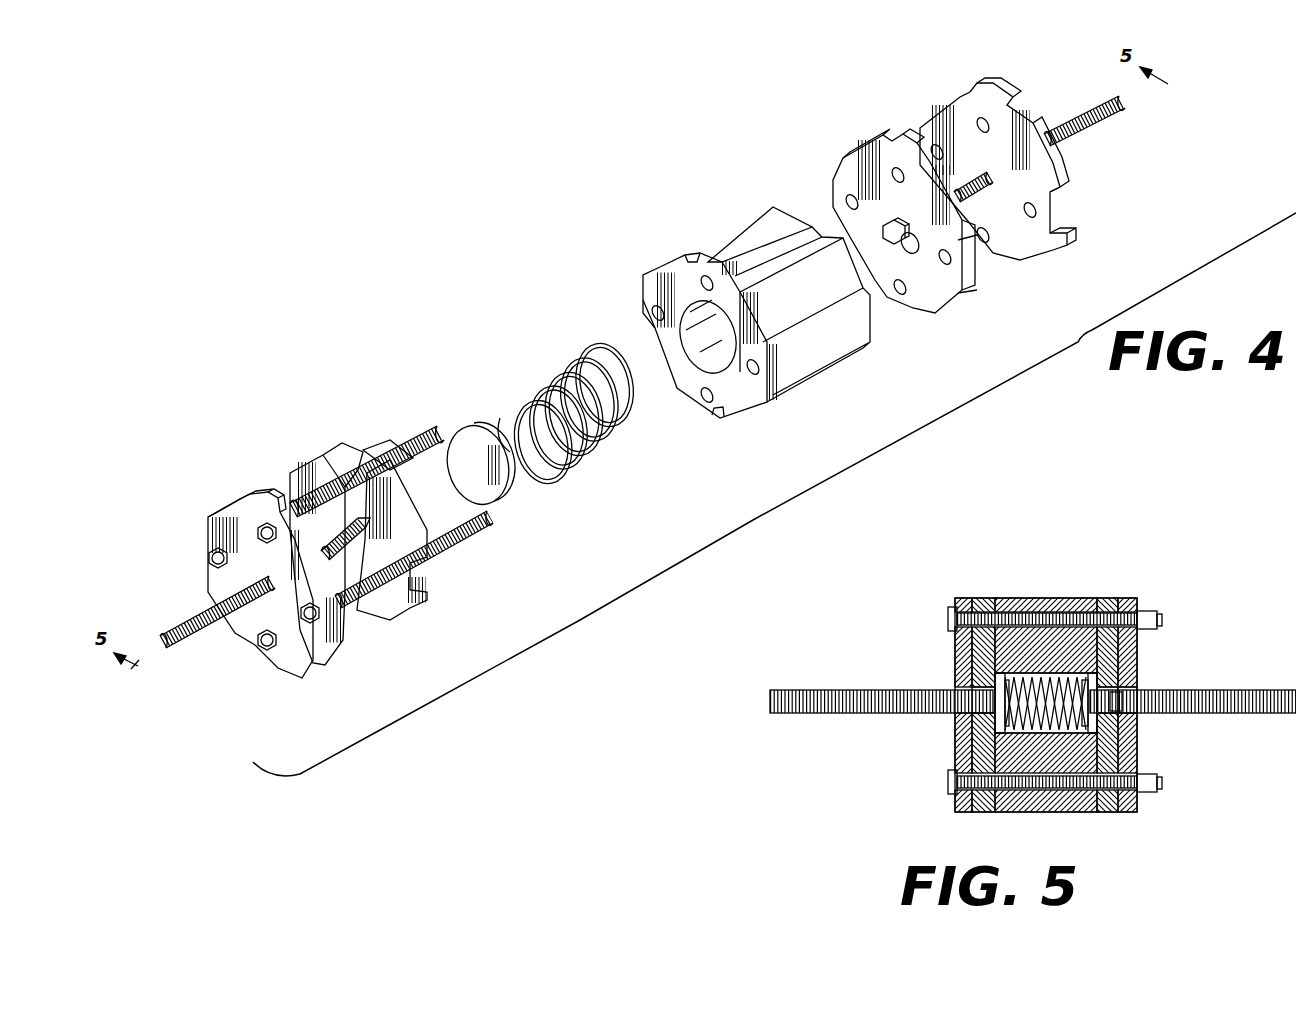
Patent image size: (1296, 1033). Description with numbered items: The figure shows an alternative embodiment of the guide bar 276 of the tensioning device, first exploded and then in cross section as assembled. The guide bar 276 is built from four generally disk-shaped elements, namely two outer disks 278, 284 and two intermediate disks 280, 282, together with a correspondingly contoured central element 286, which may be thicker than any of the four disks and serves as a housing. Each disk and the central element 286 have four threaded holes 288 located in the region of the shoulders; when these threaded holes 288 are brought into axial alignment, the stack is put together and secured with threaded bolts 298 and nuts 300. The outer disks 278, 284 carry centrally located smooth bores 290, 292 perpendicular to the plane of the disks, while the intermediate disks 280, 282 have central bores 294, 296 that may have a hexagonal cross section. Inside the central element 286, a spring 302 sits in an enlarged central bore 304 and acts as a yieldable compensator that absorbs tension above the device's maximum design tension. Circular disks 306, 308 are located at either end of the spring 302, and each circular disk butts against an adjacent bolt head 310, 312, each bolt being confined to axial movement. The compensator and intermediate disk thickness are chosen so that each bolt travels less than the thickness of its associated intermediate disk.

In FIG. 4, the guide bar 276 is at (838, 398).
In FIG. 5, the guide bar 276 is at (1097, 565).
In FIG. 4, the outer disk 278 is at (225, 505).
In FIG. 5, the outer disk 278 is at (968, 600).
In FIG. 4, the intermediate disk 280 is at (323, 465).
In FIG. 5, the intermediate disk 280 is at (987, 597).
In FIG. 4, the intermediate disk 282 is at (850, 157).
In FIG. 5, the intermediate disk 282 is at (1110, 598).
In FIG. 4, the outer disk 284 is at (948, 100).
In FIG. 5, the outer disk 284 is at (1130, 600).
In FIG. 4, the central element 286 is at (702, 252).
In FIG. 5, the central element 286 is at (1023, 597).
In FIG. 4, the threaded holes 288 is at (657, 313).
In FIG. 4, the smooth bore 290 is at (275, 580).
In FIG. 5, the smooth bore 290 is at (988, 705).
In FIG. 4, the smooth bore 292 is at (992, 180).
In FIG. 5, the smooth bore 292 is at (1140, 705).
In FIG. 4, the central bore 294 is at (355, 548).
In FIG. 5, the central bore 294 is at (987, 683).
In FIG. 4, the central bore 296 is at (914, 252).
In FIG. 5, the central bore 296 is at (1122, 690).
In FIG. 4, the threaded bolts 298 is at (410, 433).
In FIG. 5, the threaded bolts 298 is at (1040, 597).
In FIG. 4, the nuts 300 is at (259, 533).
In FIG. 5, the nuts 300 is at (945, 618).
In FIG. 4, the spring 302 is at (547, 395).
In FIG. 5, the spring 302 is at (1010, 672).
In FIG. 4, the enlarged central bore 304 is at (658, 335).
In FIG. 5, the enlarged central bore 304 is at (1077, 733).
In FIG. 4, the circular disk 306 is at (508, 485).
In FIG. 5, the circular disk 306 is at (993, 720).
In FIG. 5, the circular disk 308 is at (1093, 678).
In FIG. 5, the bolt head 310 is at (990, 698).
In FIG. 4, the bolt head 312 is at (885, 236).
In FIG. 5, the bolt head 312 is at (1137, 712).